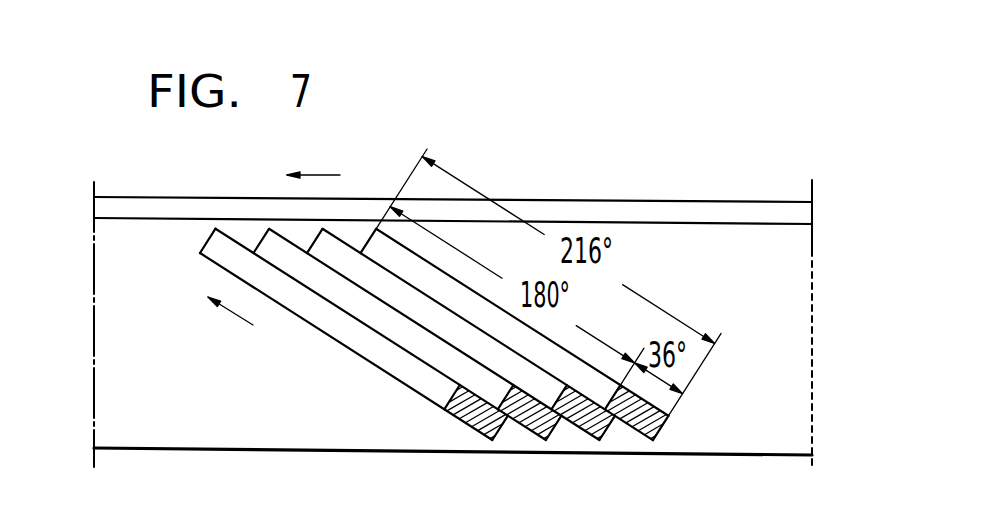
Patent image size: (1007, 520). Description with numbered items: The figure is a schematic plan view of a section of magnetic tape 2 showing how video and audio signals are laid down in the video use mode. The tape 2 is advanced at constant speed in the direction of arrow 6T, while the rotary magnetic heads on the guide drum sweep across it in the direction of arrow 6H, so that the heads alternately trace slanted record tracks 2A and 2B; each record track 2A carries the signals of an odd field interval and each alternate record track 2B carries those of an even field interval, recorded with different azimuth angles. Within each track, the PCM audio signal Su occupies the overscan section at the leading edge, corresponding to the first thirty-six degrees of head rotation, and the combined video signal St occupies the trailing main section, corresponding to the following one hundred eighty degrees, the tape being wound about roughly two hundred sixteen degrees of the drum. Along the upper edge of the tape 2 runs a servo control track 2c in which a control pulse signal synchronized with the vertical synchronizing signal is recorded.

The magnetic tape 2 is at (258, 452).
The servo control track 2c is at (673, 208).
The record track 2A is at (493, 439).
The record track 2B is at (547, 438).
The arrow indicating tape advance direction 6T is at (311, 175).
The arrow indicating head rotation direction 6H is at (218, 304).
The combined video signal St is at (329, 334).
The PCM audio signal Su is at (452, 418).